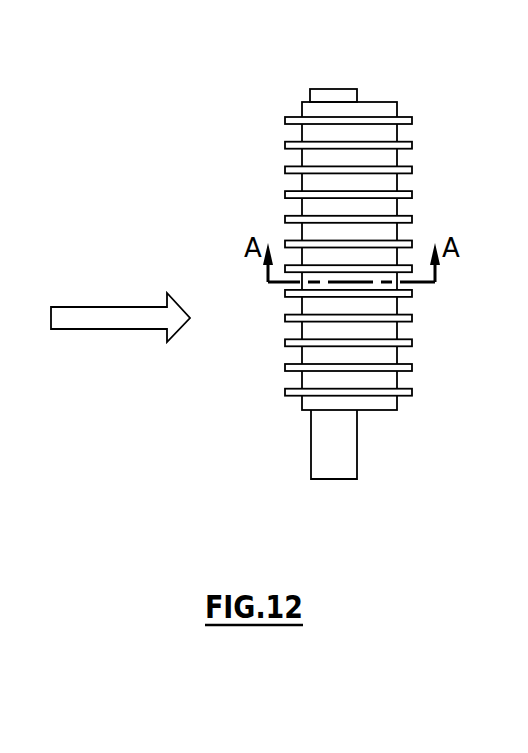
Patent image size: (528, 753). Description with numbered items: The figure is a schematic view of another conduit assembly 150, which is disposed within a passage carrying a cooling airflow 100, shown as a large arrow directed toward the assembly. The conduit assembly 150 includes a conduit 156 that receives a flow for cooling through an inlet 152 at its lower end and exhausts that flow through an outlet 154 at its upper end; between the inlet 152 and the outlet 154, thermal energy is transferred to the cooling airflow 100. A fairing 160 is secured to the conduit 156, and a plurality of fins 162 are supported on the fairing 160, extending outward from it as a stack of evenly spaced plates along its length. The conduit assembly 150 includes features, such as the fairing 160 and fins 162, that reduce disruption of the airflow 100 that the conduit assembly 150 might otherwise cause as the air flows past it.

The cooling airflow 100 is at (112, 318).
The conduit assembly 150 is at (293, 298).
The inlet 152 is at (337, 496).
The outlet 154 is at (321, 76).
The conduit 156 is at (348, 447).
The fairing 160 is at (373, 102).
The fins 162 is at (412, 120).